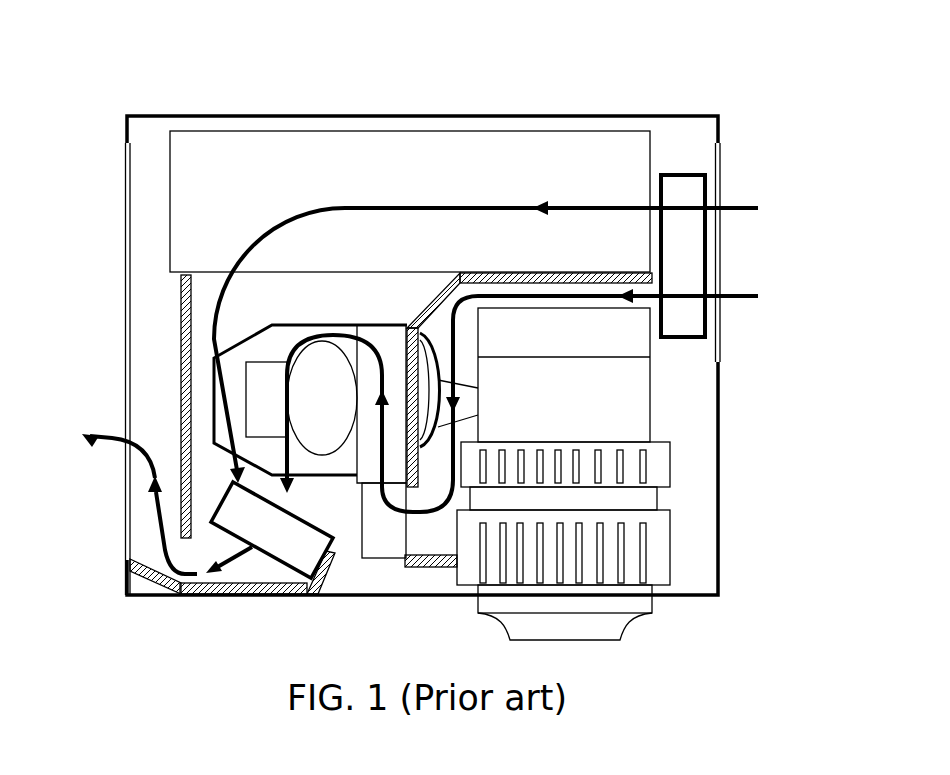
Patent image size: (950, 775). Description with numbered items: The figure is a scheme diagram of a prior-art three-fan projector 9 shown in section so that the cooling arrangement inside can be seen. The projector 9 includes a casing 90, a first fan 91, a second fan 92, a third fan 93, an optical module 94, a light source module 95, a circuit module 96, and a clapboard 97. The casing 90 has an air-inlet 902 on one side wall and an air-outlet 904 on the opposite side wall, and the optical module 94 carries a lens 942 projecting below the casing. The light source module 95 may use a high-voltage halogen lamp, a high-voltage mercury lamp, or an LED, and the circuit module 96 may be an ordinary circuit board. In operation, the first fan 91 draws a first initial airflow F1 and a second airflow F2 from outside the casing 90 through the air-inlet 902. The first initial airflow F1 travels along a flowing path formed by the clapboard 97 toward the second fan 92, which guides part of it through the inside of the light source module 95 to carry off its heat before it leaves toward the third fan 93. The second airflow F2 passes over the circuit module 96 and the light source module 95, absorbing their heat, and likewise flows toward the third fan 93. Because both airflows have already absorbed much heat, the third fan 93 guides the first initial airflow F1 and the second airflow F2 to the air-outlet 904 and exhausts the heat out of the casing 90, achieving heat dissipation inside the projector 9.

The projector 9 is at (684, 82).
The casing 90 is at (157, 116).
The air-inlet 902 is at (722, 168).
The air-outlet 904 is at (130, 302).
The first fan 91 is at (705, 267).
The second fan 92 is at (377, 563).
The third fan 93 is at (293, 565).
The optical module 94 is at (653, 378).
The lens 942 is at (638, 613).
The light source module 95 is at (282, 325).
The circuit module 96 is at (418, 155).
The clapboard 97 is at (520, 270).
The first initial airflow F1 is at (440, 425).
The second airflow F2 is at (506, 336).